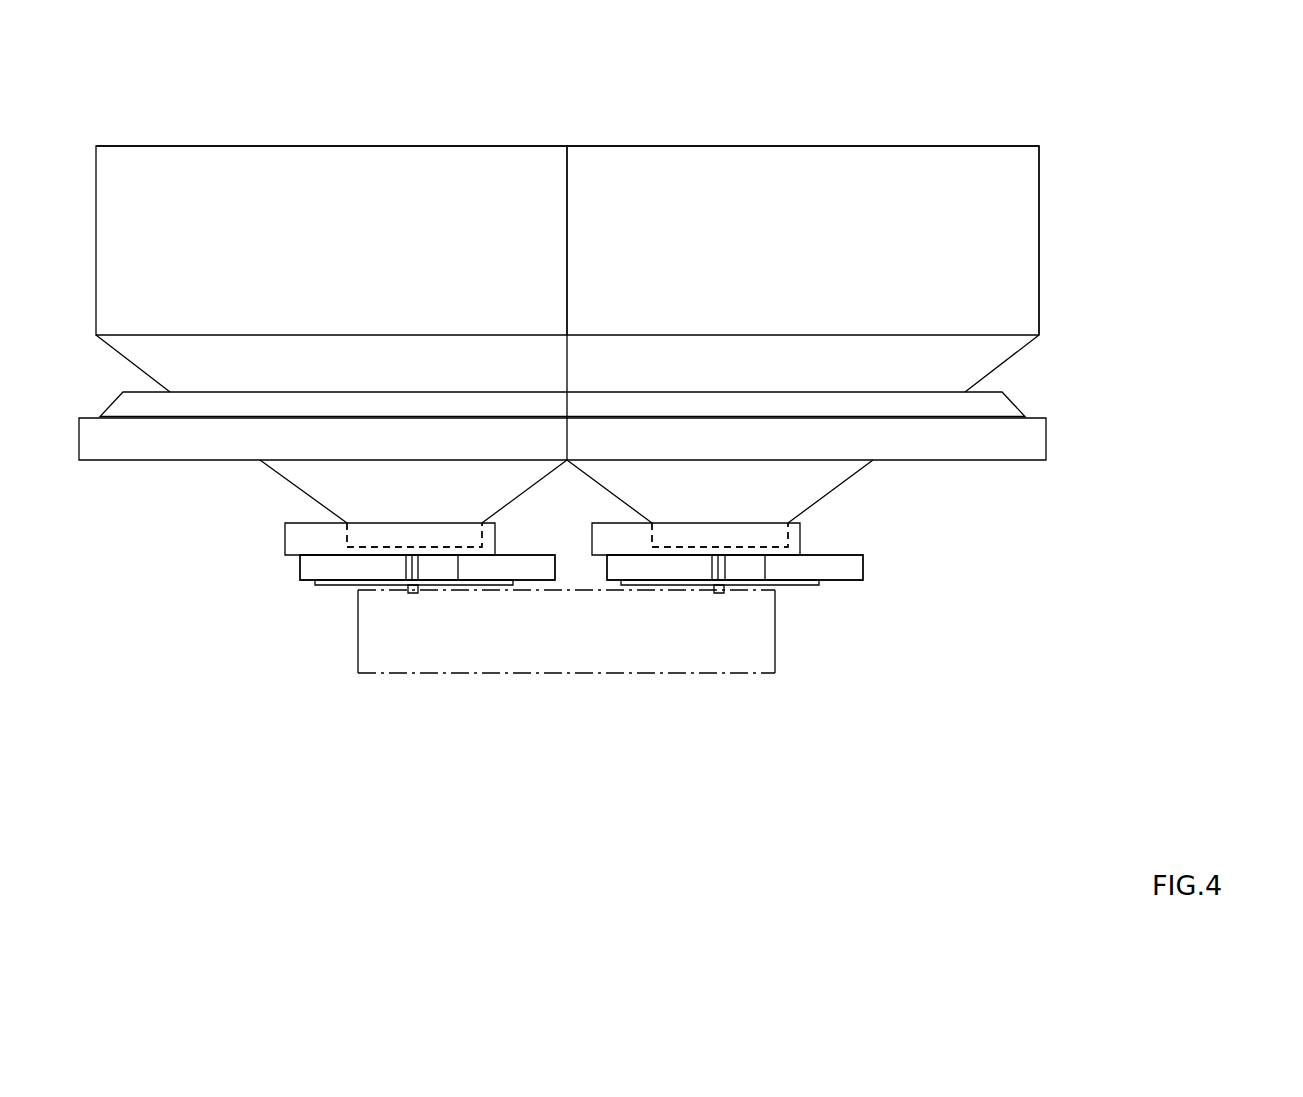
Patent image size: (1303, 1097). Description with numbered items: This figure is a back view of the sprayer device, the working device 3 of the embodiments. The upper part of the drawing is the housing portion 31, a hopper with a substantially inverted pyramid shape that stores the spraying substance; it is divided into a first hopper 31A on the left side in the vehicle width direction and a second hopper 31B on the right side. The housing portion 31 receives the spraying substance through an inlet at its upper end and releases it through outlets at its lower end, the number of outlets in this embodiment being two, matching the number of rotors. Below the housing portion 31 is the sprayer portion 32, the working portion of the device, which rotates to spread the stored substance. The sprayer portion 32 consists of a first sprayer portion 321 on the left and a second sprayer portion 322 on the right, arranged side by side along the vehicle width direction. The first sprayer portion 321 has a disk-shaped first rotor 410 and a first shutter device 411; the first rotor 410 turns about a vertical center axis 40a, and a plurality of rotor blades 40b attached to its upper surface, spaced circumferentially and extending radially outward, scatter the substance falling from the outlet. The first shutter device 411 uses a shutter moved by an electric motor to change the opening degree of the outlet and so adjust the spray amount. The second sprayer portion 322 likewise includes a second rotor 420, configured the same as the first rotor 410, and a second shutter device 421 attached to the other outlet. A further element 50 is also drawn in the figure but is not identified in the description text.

The working device 3 is at (950, 97).
The housing portion 31 is at (262, 142).
The first hopper 31A is at (473, 146).
The second hopper 31B is at (781, 146).
The sprayer portion 32 is at (581, 624).
The first sprayer portion 321 is at (343, 624).
The second sprayer portion 322 is at (804, 567).
The center axis 40a is at (418, 594).
The rotor blade 40b is at (300, 570).
The first rotor 410 is at (348, 588).
The first shutter device 411 is at (352, 530).
The second rotor 420 is at (783, 589).
The second shutter device 421 is at (788, 547).
The workpiece 50 is at (777, 662).